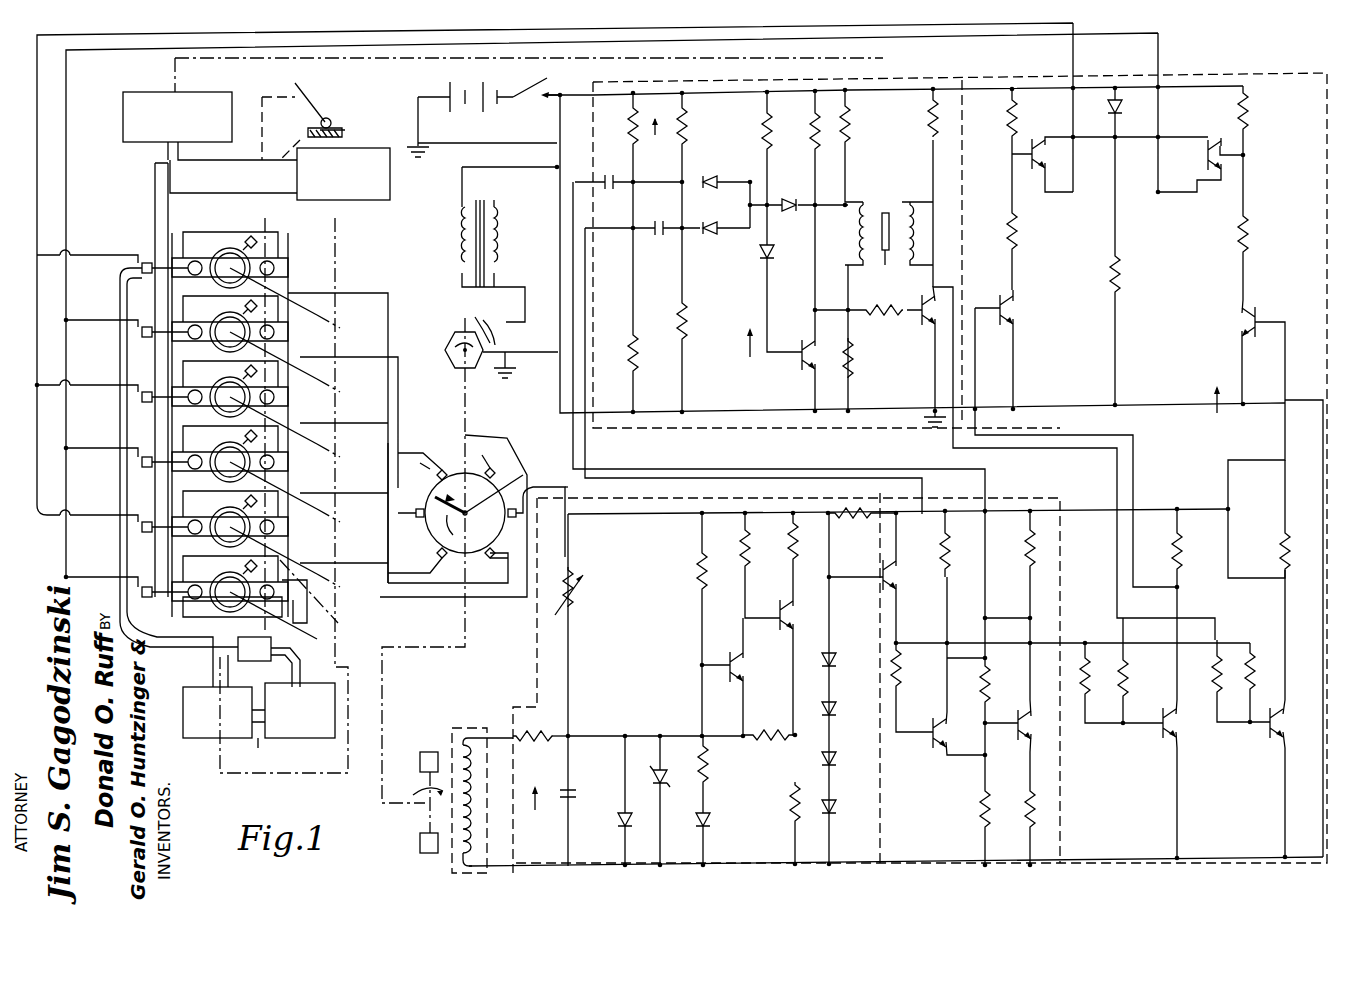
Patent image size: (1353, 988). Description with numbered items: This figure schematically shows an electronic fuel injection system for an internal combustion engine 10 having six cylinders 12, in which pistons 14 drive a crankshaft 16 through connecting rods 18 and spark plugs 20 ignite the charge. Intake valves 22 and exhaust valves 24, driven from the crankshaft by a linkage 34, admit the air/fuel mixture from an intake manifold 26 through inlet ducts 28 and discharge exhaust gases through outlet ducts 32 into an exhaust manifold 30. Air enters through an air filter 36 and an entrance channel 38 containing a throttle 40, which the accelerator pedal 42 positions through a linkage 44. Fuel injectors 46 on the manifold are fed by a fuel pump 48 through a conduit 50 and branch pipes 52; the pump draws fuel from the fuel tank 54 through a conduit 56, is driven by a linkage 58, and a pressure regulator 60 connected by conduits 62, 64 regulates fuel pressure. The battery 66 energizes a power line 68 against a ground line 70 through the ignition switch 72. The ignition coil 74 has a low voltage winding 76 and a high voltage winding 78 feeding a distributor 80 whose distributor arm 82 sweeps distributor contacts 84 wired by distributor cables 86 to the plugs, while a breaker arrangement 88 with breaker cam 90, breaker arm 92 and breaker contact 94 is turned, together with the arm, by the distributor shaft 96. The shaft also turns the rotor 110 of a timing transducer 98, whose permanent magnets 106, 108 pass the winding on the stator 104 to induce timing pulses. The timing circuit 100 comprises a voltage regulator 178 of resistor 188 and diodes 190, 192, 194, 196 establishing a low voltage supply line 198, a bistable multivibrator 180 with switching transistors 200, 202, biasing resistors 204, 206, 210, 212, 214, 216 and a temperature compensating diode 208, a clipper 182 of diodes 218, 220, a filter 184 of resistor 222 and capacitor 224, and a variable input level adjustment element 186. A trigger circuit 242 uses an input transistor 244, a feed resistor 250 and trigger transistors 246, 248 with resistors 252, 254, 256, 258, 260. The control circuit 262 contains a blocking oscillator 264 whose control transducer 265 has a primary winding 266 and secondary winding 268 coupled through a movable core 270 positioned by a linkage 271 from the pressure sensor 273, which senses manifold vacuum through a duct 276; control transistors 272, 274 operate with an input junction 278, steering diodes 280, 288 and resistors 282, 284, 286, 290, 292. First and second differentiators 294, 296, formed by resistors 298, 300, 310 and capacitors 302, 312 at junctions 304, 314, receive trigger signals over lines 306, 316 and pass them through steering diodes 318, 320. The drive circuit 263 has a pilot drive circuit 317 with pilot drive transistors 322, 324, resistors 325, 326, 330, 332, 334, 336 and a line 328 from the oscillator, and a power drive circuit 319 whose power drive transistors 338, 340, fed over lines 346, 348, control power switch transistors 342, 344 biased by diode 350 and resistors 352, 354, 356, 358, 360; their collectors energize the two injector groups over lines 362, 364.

The engine control system 10 is at (104, 155).
The internal combustion engine 12 is at (202, 233).
The cylinders 14 is at (226, 314).
The engine boundary 16 is at (337, 470).
The crankshaft drive 18 is at (313, 357).
The spark plug 20 is at (252, 237).
The intake valve 22 is at (205, 387).
The exhaust valve 24 is at (237, 387).
The intake manifold 26 is at (157, 225).
The injector solenoid 28 is at (173, 326).
The spark plug wire 30 is at (295, 267).
The spark plug wire 32 is at (280, 268).
The spark plug terminal 34 is at (210, 233).
The air filter 36 is at (357, 148).
The intake passage 38 is at (190, 177).
The throttle linkage 40 is at (258, 168).
The throttle lever 42 is at (316, 108).
The throttle connection 44 is at (281, 128).
The fuel injector 46 is at (145, 387).
The fuel pump 48 is at (192, 740).
The fuel rail 50 is at (128, 298).
The injector wiring 52 is at (128, 268).
The fuel tank 54 is at (300, 740).
The pump-tank connection 56 is at (257, 738).
The fuel system boundary 58 is at (273, 773).
The pressure regulator connection 60 is at (240, 660).
The pressure regulator 62 is at (222, 648).
The fuel return line 64 is at (302, 678).
The battery 66 is at (497, 92).
The control circuit 68 is at (578, 95).
The ground 70 is at (420, 142).
The ignition switch 72 is at (532, 100).
The ignition coil 74 is at (477, 182).
The primary winding 76 is at (462, 250).
The secondary winding 78 is at (497, 266).
The distributor 80 is at (432, 447).
The distributor cap terminal 82 is at (480, 457).
The distributor output lead 84 is at (518, 497).
The distributor terminals 86 is at (448, 514).
The crankshaft rotation 88 is at (452, 315).
The crankshaft pulley 90 is at (448, 350).
The drive belt 92 is at (478, 322).
The ground connection 94 is at (505, 378).
The distributor shaft 96 is at (382, 700).
The pickup coil lead 98 is at (462, 715).
The pulse shaping circuit 100 is at (534, 640).
The magnetic pickup 104 is at (462, 873).
The magnet 106 is at (418, 762).
The magnet 108 is at (420, 854).
The rotor rotation 110 is at (428, 822).
The diode string 178 is at (860, 818).
The timing circuit 180 is at (690, 608).
The signal node 182 is at (638, 730).
The pulse input 184 is at (540, 816).
The variable resistor 186 is at (578, 605).
The resistor 188 is at (875, 523).
The diode 190 is at (832, 662).
The diode 192 is at (832, 710).
The diode 194 is at (832, 759).
The diode 196 is at (832, 807).
The supply line 198 is at (590, 522).
The transistor 200 is at (740, 678).
The pickup coil 202 is at (468, 738).
The resistor 204 is at (700, 575).
The resistor 206 is at (710, 774).
The diode 208 is at (710, 823).
The resistor 210 is at (785, 732).
The resistor 212 is at (793, 803).
The resistor 214 is at (744, 550).
The resistor 216 is at (792, 578).
The diode 218 is at (623, 817).
The zener diode 220 is at (680, 760).
The resistor 222 is at (541, 751).
The capacitor 224 is at (570, 787).
The comparator circuit 242 is at (994, 493).
The transistor 244 is at (874, 578).
The transistor 246 is at (960, 667).
The transistor 248 is at (1019, 744).
The resistor 250 is at (901, 673).
The resistor 252 is at (1028, 805).
The resistor 254 is at (948, 560).
The resistor 256 is at (990, 683).
The resistor 258 is at (980, 828).
The resistor 260 is at (1030, 563).
The pressure sensing circuit 262 is at (894, 83).
The output circuit 263 is at (1242, 78).
The signal direction 264 is at (733, 356).
The transformer 265 is at (897, 180).
The secondary winding 266 is at (912, 240).
The primary winding 268 is at (863, 295).
The movable core 270 is at (888, 258).
The pressure sensor link 271 is at (182, 68).
The transistor 272 is at (790, 374).
The pressure sensor 273 is at (123, 98).
The resistor 274 is at (913, 305).
The manifold pressure line 276 is at (182, 152).
The zener diode 278 is at (765, 248).
The diode 280 is at (785, 209).
The resistor 282 is at (845, 145).
The resistor 284 is at (855, 370).
The resistor 286 is at (765, 133).
The diode 288 is at (763, 263).
The resistor 290 is at (812, 133).
The transistor 292 is at (877, 330).
The signal direction 294 is at (655, 119).
The resistor 296 is at (651, 373).
The resistor 298 is at (618, 212).
The resistor 300 is at (630, 338).
The capacitor 302 is at (625, 180).
The capacitor 304 is at (633, 185).
The resistor 306 is at (690, 145).
The resistor 310 is at (683, 340).
The capacitor 312 is at (652, 250).
The diode 314 is at (700, 225).
The line 316 is at (587, 226).
The node 317 is at (1183, 510).
The diode 318 is at (705, 177).
The output signal 319 is at (1236, 411).
The diode 320 is at (705, 250).
The transistor 322 is at (1178, 742).
The transistor 324 is at (1292, 718).
The resistor 325 is at (1092, 640).
The resistor 326 is at (1128, 685).
The line 328 is at (1115, 547).
The resistor 330 is at (1205, 694).
The resistor 332 is at (1253, 652).
The resistor 334 is at (1183, 560).
The resistor 336 is at (1286, 528).
The transistor 338 is at (1013, 310).
The transistor 340 is at (1243, 322).
The transistor 342 is at (1020, 190).
The transistor 344 is at (1210, 185).
The line 346 is at (1090, 438).
The line 348 is at (1285, 365).
The diode 350 is at (1120, 118).
The resistor 352 is at (1129, 285).
The resistor 354 is at (1017, 133).
The resistor 356 is at (1025, 248).
The resistor 358 is at (1248, 130).
The resistor 360 is at (1250, 250).
The supply line 362 is at (1073, 28).
The supply line 364 is at (1160, 60).